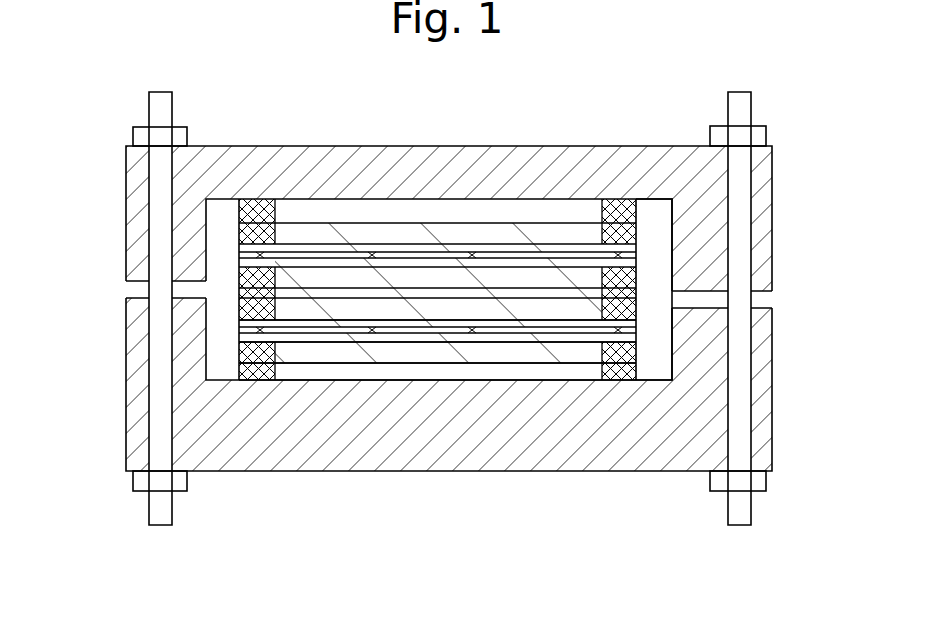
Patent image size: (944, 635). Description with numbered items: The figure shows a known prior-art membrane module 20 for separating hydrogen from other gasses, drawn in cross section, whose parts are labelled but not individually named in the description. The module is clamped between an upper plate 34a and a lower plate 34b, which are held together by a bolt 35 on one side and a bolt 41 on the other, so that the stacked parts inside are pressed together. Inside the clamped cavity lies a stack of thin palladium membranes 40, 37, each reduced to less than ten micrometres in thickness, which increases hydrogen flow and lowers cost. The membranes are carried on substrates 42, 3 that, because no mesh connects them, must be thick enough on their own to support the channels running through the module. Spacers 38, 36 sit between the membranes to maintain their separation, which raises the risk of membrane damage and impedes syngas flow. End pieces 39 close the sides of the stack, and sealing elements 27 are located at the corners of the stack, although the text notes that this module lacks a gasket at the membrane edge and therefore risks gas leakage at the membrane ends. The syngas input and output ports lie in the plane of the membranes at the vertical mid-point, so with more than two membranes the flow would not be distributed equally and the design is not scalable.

The upper clamping plate 34a is at (243, 146).
The lower clamping plate 34b is at (235, 472).
The seal 27 is at (275, 210).
The bolt 35 is at (727, 102).
The end frame 39 is at (672, 225).
The membrane 40 is at (637, 255).
The spacer 38 is at (772, 299).
The end frame 36 is at (672, 355).
The gap 41 is at (127, 286).
The membrane 37 is at (237, 332).
The electrode layer 42 is at (399, 300).
The frame plate 20 is at (507, 365).
The electrode layer 3 is at (583, 345).